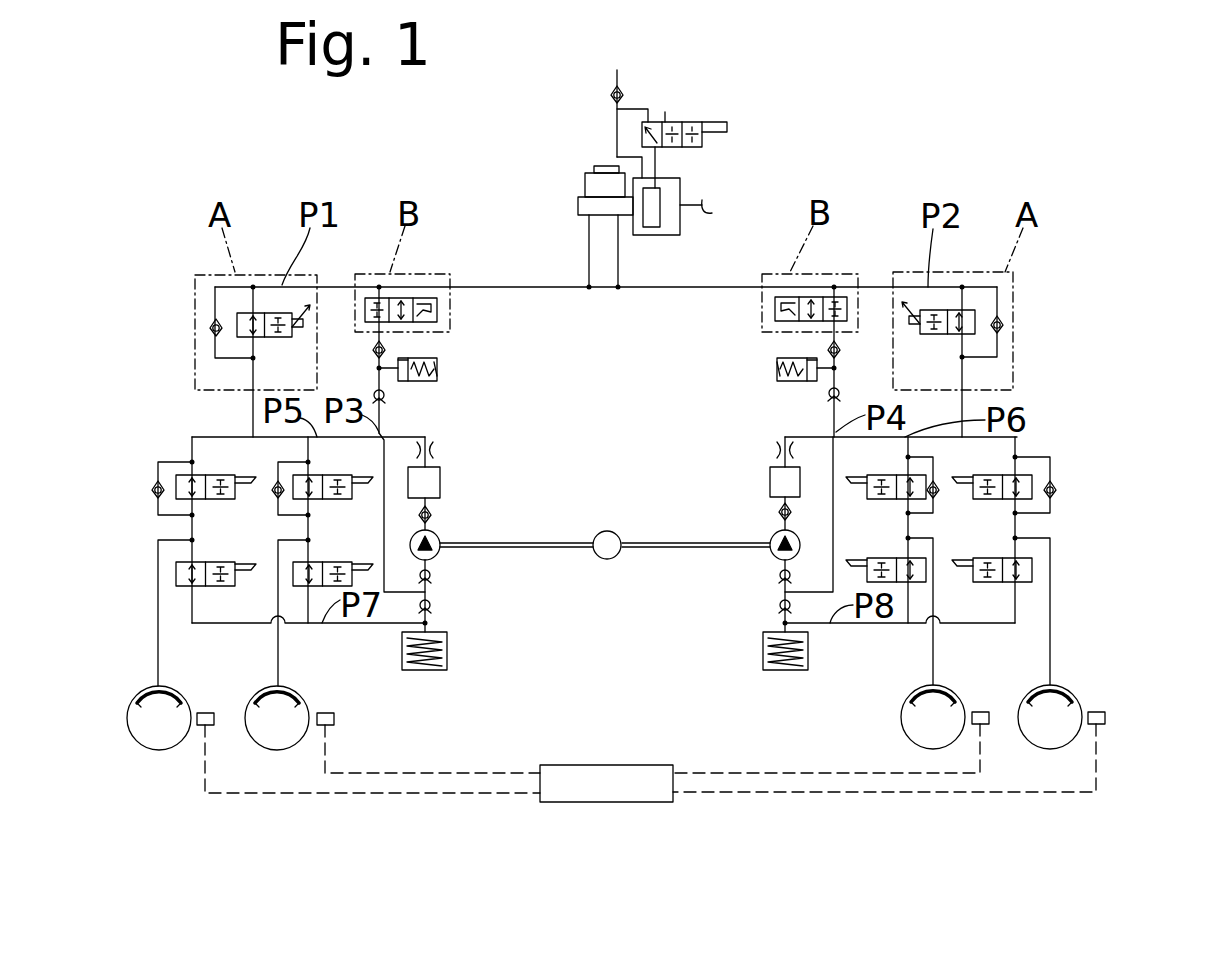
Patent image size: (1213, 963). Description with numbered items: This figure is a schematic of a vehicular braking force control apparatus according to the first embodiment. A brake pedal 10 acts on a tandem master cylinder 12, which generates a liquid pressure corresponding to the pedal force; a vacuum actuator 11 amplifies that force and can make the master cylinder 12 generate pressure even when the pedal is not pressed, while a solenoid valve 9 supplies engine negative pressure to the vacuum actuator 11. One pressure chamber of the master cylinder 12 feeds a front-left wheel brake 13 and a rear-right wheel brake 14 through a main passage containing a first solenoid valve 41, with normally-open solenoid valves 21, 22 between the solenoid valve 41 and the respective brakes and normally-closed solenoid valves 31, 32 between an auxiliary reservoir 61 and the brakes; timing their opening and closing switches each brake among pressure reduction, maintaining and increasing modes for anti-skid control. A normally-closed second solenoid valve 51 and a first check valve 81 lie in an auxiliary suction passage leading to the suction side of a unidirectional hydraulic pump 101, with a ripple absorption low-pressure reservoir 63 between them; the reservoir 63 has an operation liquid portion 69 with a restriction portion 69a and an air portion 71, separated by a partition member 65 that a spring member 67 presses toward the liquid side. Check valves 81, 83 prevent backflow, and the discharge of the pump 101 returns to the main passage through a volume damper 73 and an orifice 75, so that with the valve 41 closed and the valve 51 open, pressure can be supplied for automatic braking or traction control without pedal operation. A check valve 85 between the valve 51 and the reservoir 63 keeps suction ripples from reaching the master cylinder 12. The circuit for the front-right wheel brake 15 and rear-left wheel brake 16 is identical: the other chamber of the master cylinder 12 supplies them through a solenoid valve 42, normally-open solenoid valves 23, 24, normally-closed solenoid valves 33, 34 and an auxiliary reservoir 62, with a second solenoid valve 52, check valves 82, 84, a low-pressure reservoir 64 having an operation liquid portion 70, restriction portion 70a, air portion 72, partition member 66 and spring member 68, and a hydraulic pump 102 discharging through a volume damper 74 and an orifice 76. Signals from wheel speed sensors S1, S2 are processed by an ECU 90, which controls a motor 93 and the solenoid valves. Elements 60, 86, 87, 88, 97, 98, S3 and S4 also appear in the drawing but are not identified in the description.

The solenoid valve 9 is at (688, 122).
The brake pedal 10 is at (718, 215).
The vacuum actuator 11 is at (651, 235).
The tandem master cylinder 12 is at (578, 207).
The front-left wheel brake 13 is at (148, 690).
The rear-right wheel brake 14 is at (300, 693).
The front-right wheel brake 15 is at (912, 693).
The rear-left wheel brake 16 is at (1068, 693).
The normally-open solenoid valve 21 is at (200, 475).
The normally-open solenoid valve 22 is at (315, 475).
The normally-open solenoid valve 23 is at (900, 475).
The normally-open solenoid valve 24 is at (1000, 475).
The normally-closed solenoid valve 31 is at (200, 562).
The normally-closed solenoid valve 32 is at (315, 562).
The normally-closed solenoid valve 33 is at (900, 560).
The normally-closed solenoid valve 34 is at (1005, 560).
The solenoid valve 41 is at (280, 338).
The solenoid valve 42 is at (928, 336).
The normally-closed solenoid valve 51 is at (422, 318).
The second solenoid valve 52 is at (790, 318).
The brake booster 60 is at (585, 180).
The auxiliary reservoir 61 is at (425, 670).
The auxiliary reservoir 62 is at (787, 670).
The ripple absorption low-pressure reservoir 63 is at (430, 381).
The ripple absorption low-pressure reservoir 64 is at (790, 381).
The partition member 65 is at (402, 381).
The partition member 66 is at (810, 381).
The spring member 67 is at (430, 381).
The spring member 68 is at (800, 381).
The operation liquid portion 69 is at (420, 358).
The restriction portion 69a is at (405, 358).
The operation liquid portion 70 is at (790, 358).
The restriction portion 70a is at (805, 358).
The air portion 71 is at (437, 368).
The air portion 72 is at (777, 368).
The volume damper 73 is at (440, 478).
The volume damper 74 is at (770, 480).
The orifice 75 is at (435, 450).
The orifice 76 is at (778, 450).
The check valve 81 is at (378, 392).
The check valve 82 is at (840, 392).
The check valve 83 is at (433, 578).
The check valve 84 is at (777, 578).
The check valve 85 is at (375, 347).
The check valve 86 is at (840, 347).
The check valve 87 is at (433, 608).
The check valve 88 is at (778, 608).
The ECU 90 is at (610, 802).
The motor 93 is at (607, 560).
The drive shaft 97 is at (535, 543).
The drive shaft 98 is at (670, 543).
The hydraulic pump 101 is at (445, 555).
The hydraulic pump 102 is at (770, 555).
The wheel speed sensor S1 is at (206, 713).
The wheel speed sensor S2 is at (330, 713).
The wheel speed sensor S3 is at (980, 712).
The wheel speed sensor S4 is at (1100, 712).